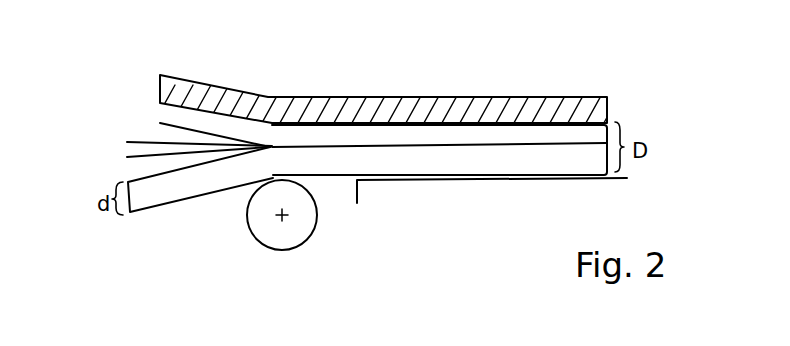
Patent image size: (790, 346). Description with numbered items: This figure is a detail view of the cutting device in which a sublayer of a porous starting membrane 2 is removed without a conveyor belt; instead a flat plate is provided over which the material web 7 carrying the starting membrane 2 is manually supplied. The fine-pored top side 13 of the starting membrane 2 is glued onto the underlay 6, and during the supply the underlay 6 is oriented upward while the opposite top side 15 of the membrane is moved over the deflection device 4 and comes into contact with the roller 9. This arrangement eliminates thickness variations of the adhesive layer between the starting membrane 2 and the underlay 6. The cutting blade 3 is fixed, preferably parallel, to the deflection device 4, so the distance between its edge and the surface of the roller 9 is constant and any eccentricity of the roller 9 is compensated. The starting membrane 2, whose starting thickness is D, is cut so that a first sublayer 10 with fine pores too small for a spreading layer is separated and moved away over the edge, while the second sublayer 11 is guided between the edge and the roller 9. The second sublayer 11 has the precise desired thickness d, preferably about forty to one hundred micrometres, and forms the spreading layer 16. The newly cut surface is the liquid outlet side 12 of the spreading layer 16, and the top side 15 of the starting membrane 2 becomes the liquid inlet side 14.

The starting membrane 2 is at (641, 118).
The cutting blade 3 is at (133, 141).
The deflection device 4 is at (280, 266).
The underlay 6 is at (418, 106).
The material web 7 is at (556, 70).
The roller 9 is at (298, 232).
The first sublayer 10 is at (193, 120).
The second sublayer 11 is at (438, 165).
The liquid outlet side 12 is at (133, 182).
The fine-pored top side 13 is at (355, 122).
The liquid inlet side 14 is at (149, 208).
The top side 15 is at (180, 203).
The spreading layer 16 is at (140, 212).